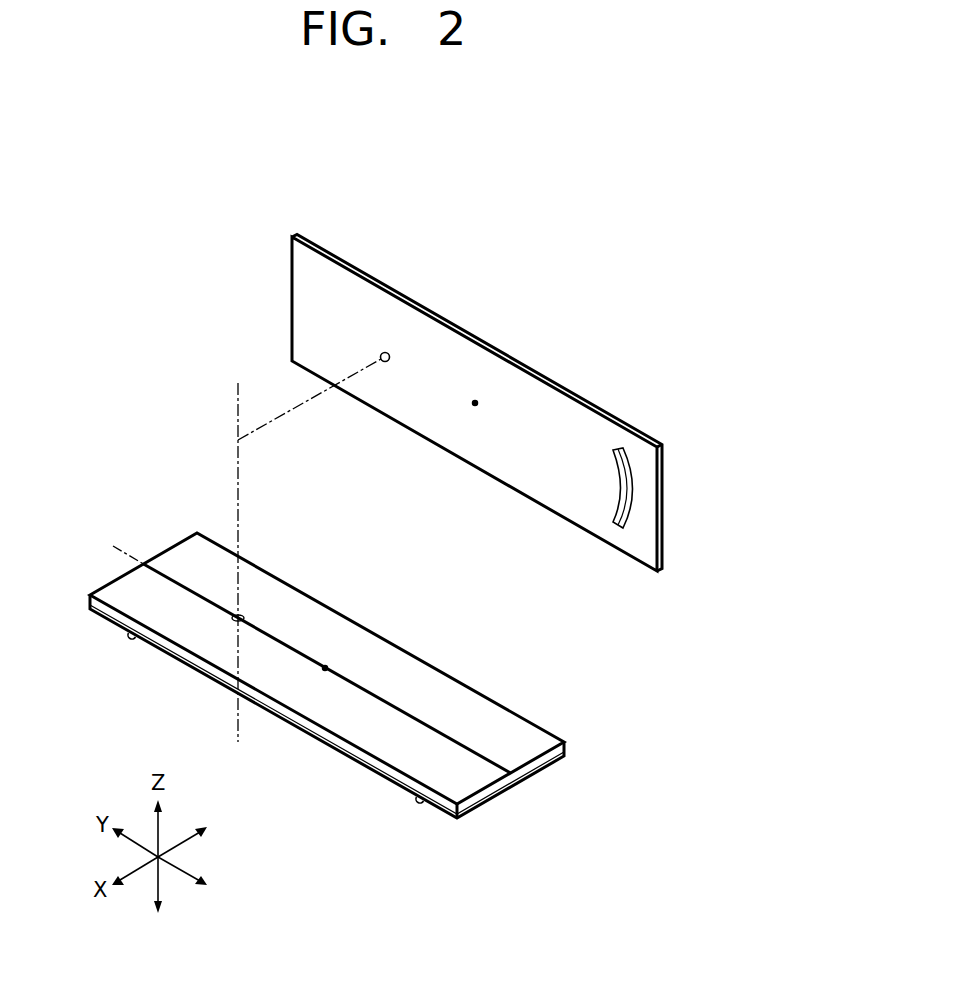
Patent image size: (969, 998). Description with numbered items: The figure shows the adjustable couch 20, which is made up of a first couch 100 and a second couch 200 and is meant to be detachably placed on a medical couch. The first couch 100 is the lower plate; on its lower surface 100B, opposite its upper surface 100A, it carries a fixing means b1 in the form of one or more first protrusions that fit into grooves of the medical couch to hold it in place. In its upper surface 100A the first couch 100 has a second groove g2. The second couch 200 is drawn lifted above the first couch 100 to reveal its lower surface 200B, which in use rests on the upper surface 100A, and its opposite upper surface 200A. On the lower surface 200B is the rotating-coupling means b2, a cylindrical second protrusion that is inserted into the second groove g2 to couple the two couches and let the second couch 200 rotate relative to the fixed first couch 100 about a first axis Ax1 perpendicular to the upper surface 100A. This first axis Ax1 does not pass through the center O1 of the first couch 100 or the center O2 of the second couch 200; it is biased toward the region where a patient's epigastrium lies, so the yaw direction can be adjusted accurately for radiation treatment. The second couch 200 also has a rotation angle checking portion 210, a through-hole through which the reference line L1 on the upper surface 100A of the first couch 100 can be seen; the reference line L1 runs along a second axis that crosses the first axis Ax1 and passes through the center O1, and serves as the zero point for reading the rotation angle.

The adjustable couch 20 is at (581, 267).
The first couch 100 is at (351, 700).
The upper surface 100A is at (523, 737).
The lower surface 100B is at (550, 768).
The second couch 200 is at (526, 428).
The upper surface of second couch 200A is at (648, 440).
The lower surface 200B is at (640, 543).
The rotation angle checking portion 210 is at (620, 507).
The reference line L1 is at (418, 719).
The center of the first couch O1 is at (327, 668).
The center of the second couch O2 is at (475, 405).
The second groove g2 is at (243, 617).
The fixing means b1 is at (130, 638).
The rotating-coupling means b2 is at (383, 352).
The first axis Ax1 is at (238, 393).